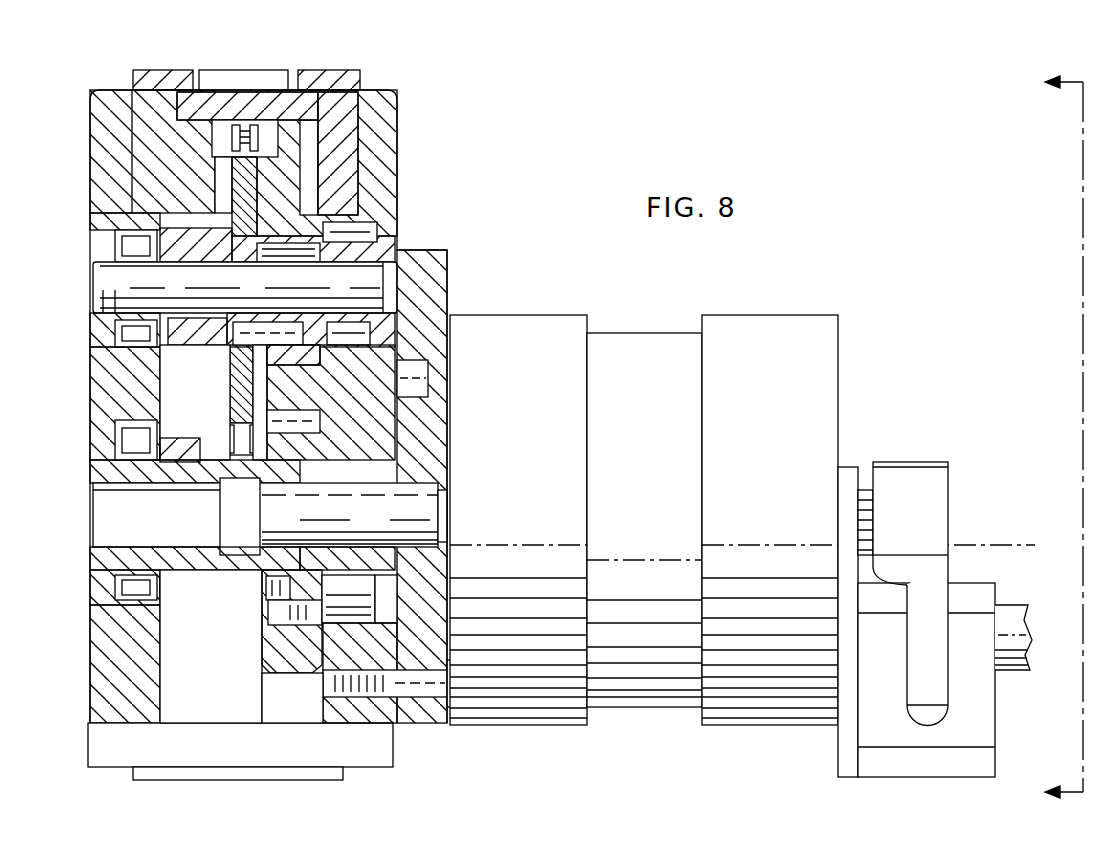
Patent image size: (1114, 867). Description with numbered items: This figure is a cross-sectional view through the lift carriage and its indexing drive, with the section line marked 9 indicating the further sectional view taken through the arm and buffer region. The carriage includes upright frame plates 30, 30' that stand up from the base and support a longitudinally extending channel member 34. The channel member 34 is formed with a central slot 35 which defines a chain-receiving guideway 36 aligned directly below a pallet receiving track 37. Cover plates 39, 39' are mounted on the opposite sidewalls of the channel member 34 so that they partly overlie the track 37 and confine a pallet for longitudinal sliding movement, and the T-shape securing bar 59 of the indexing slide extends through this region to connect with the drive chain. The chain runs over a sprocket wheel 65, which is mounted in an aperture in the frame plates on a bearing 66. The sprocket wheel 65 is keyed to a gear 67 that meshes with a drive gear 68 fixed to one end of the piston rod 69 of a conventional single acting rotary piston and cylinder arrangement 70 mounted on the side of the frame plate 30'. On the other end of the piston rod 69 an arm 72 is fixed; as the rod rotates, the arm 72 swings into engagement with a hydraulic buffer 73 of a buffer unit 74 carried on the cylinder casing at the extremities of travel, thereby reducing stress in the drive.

The upright frame plate 30 is at (218, 692).
The upright frame plate 30' is at (457, 486).
The channel member 34 is at (150, 166).
The central slot 35 is at (257, 166).
The chain-receiving guideway 36 is at (283, 143).
The pallet receiving track 37 is at (320, 108).
The cover plate 39 is at (373, 141).
The cover plate 39' is at (121, 73).
The T-shape securing bar 59 is at (275, 72).
The sprocket wheel 65 is at (292, 198).
The bearing 66 is at (143, 242).
The gear 67 is at (397, 262).
The drive gear 68 is at (278, 387).
The piston rod 69 is at (260, 520).
The single acting rotary piston and cylinder arrangement 70 is at (656, 401).
The arm 72 is at (930, 518).
The hydraulic buffer 73 is at (922, 716).
The buffer unit 74 is at (870, 742).
The section line 9- 9 is at (1047, 438).